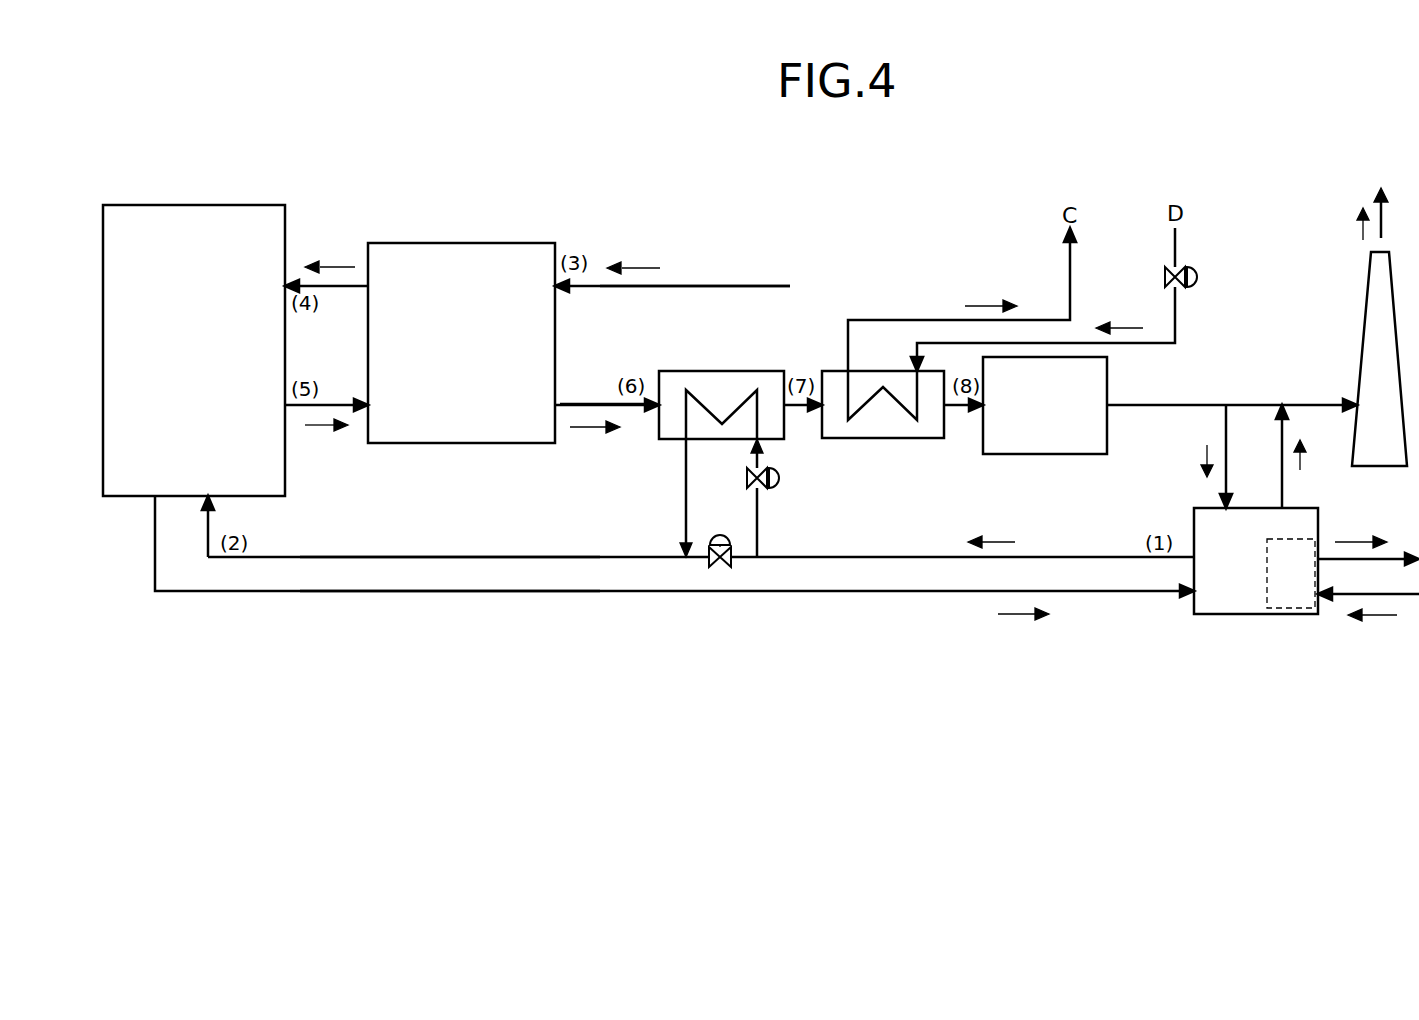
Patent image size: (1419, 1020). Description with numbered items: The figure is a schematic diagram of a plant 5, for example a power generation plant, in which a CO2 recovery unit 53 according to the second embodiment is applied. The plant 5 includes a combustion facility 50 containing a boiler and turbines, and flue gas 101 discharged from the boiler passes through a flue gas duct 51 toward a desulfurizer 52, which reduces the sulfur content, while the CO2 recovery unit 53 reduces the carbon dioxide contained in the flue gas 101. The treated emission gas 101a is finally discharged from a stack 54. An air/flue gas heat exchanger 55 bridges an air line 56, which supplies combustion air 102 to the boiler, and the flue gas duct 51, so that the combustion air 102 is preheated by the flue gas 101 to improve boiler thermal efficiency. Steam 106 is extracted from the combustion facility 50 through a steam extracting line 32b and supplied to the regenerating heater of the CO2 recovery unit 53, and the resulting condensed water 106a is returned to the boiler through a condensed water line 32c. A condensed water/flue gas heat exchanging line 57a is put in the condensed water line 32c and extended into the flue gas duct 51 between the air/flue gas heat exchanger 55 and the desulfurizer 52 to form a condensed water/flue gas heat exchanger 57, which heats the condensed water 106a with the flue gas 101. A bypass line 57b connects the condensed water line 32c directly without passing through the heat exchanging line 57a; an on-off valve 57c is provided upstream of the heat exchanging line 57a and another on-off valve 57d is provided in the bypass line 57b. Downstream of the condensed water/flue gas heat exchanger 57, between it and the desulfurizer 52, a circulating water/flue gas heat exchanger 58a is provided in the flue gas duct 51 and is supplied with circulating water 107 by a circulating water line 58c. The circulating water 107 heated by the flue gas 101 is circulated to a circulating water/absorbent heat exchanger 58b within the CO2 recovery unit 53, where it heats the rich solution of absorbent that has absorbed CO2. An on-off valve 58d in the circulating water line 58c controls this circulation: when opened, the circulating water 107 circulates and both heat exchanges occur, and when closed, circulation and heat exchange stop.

The plant 5 is at (508, 170).
The combustion facility 50 is at (238, 207).
The flue gas duct 51 is at (593, 400).
The desulfurizer 52 is at (1051, 454).
The CO2 recovery unit 53 is at (1272, 615).
The stack 54 is at (1362, 319).
The air/flue gas heat exchanger 55 is at (513, 245).
The air line 56 is at (686, 286).
The condensed water/flue gas heat exchanger 57 is at (667, 440).
The condensed water/flue gas heat exchanging line 57a is at (717, 416).
The bypass line 57b is at (738, 565).
The on-off valve 57c is at (779, 480).
The on-off valve 57d is at (719, 535).
The circulating water/flue gas heat exchanger 58a is at (913, 438).
The circulating water/absorbent heat exchanger 58b is at (1310, 610).
The circulating water line 58c is at (893, 418).
The on-off valve 58d is at (1195, 280).
The flue gas 101 is at (328, 427).
The emission gas 101a is at (1357, 226).
The combustion air 102 is at (329, 266).
The steam 106 is at (1012, 618).
The condensed water 106a is at (990, 543).
The circulating water 107 is at (992, 307).
The steam extracting line 32b is at (631, 592).
The condensed water line 32c is at (555, 556).